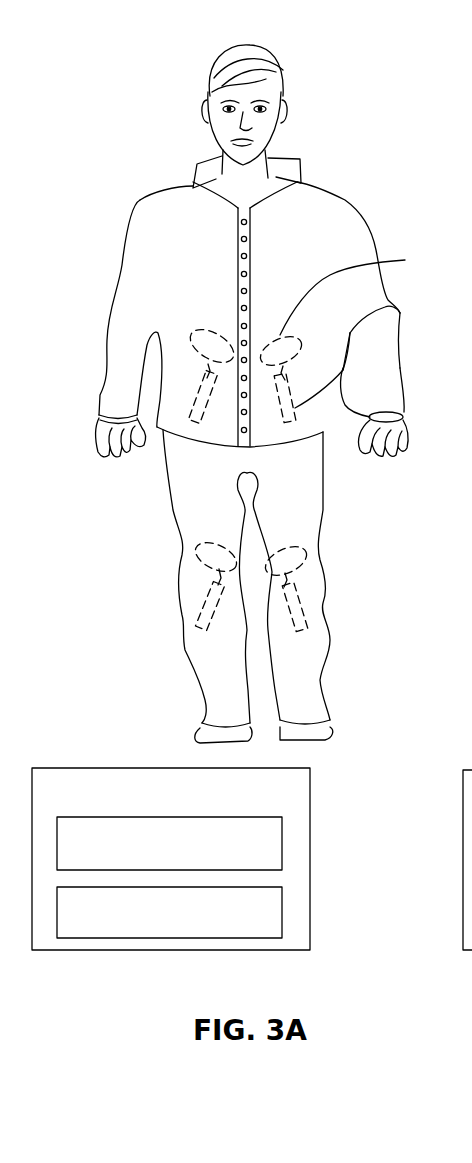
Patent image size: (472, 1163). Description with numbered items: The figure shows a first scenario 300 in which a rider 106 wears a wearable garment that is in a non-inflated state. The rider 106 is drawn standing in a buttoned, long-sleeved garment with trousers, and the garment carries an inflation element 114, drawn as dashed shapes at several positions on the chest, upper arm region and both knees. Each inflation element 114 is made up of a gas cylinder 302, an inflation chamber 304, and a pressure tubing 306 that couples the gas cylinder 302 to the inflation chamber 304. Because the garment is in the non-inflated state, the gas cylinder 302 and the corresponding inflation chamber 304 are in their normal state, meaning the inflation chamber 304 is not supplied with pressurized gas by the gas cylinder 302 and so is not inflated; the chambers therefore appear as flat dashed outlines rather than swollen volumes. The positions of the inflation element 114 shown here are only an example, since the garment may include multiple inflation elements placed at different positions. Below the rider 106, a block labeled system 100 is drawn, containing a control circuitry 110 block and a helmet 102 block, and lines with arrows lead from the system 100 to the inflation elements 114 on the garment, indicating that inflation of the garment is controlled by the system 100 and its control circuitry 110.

The system 100 is at (171, 859).
The helmet 102 is at (169, 912).
The rider 106 is at (262, 46).
The control circuitry 110 is at (169, 843).
The inflation element 114 is at (57, 768).
The first scenario 300 is at (300, 105).
The gas cylinder 302 is at (343, 368).
The inflation chamber 304 is at (358, 294).
The pressure tubing 306 is at (392, 308).